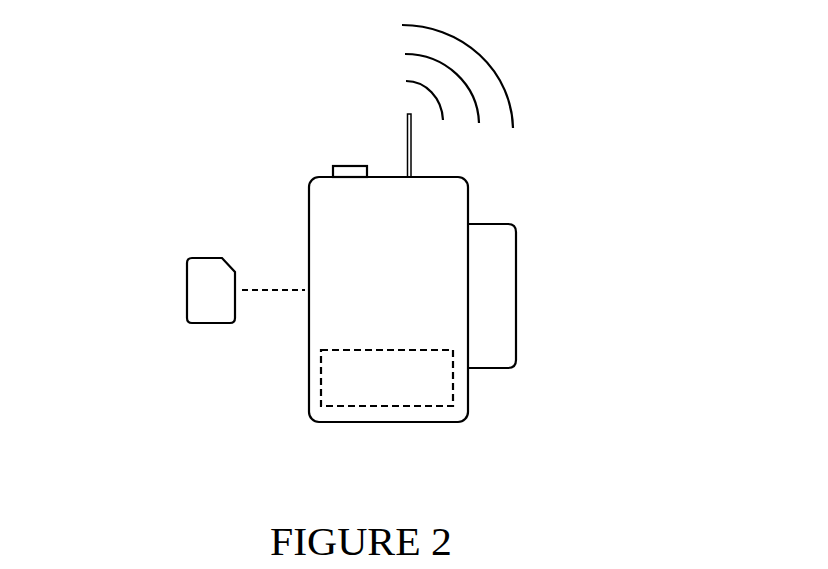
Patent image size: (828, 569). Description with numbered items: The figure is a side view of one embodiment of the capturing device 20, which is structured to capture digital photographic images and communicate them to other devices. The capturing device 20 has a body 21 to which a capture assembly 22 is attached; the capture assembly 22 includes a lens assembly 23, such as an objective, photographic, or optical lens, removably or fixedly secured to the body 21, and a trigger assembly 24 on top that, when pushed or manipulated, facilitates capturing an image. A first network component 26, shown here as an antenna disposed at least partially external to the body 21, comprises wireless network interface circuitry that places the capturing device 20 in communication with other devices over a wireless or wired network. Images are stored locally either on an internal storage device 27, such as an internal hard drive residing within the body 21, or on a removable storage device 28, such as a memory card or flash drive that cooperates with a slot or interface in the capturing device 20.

The capturing device 20 is at (193, 175).
The body 21 is at (391, 292).
The capture assembly 22 is at (547, 227).
The lens assembly 23 is at (516, 322).
The trigger assembly 24 is at (339, 165).
The first network component 26 is at (411, 152).
The internal storage device 27 is at (453, 393).
The removable storage device 28 is at (187, 290).